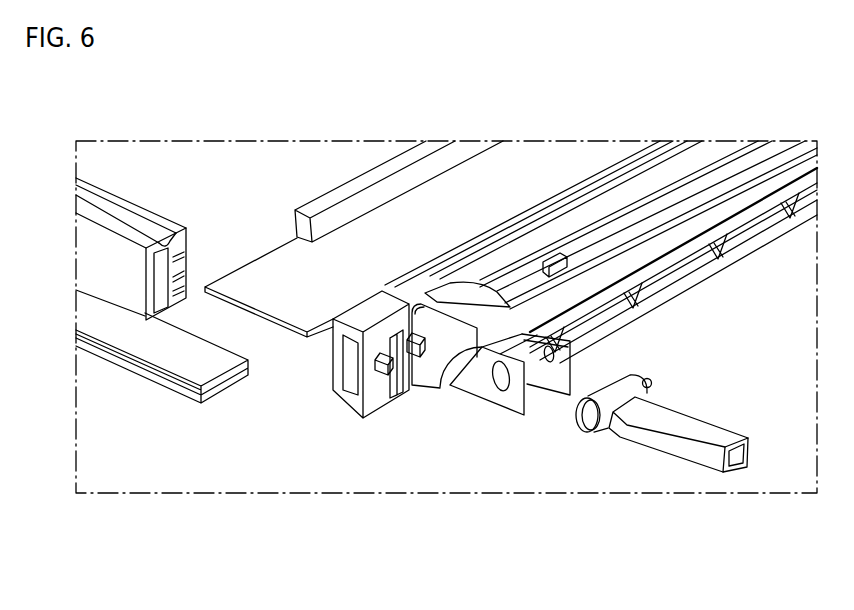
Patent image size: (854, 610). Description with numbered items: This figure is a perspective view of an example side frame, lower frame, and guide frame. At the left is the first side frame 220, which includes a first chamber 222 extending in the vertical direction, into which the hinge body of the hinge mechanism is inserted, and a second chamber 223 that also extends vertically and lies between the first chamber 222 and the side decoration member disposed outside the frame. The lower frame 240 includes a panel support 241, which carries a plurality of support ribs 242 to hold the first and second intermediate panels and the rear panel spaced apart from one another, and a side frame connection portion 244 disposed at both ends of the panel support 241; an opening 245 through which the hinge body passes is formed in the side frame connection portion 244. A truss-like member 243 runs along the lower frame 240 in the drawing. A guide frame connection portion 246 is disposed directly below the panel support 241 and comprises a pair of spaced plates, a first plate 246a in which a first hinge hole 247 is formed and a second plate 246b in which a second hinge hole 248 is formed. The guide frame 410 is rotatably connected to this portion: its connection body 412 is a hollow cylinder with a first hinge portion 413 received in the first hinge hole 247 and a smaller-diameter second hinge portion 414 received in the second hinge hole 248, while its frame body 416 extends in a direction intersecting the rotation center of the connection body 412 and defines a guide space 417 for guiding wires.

The first side frame 220 is at (144, 284).
The first chamber 222 is at (186, 290).
The second chamber 223 is at (150, 287).
The lower frame 240 is at (601, 229).
The panel support 241 is at (730, 202).
The support rib 242 is at (458, 292).
The truss member 243 is at (672, 252).
The side frame connection portion 244 is at (344, 382).
The opening 245 is at (411, 389).
The guide frame connection portion 246 is at (498, 444).
The first plate 246a is at (493, 439).
The second plate 246b is at (553, 439).
The first hinge hole 247 is at (494, 385).
The second hinge hole 248 is at (547, 361).
The guide frame 410 is at (688, 404).
The connection body 412 is at (609, 410).
The first hinge portion 413 is at (588, 426).
The second hinge portion 414 is at (646, 379).
The frame body 416 is at (708, 427).
The guide space 417 is at (757, 448).